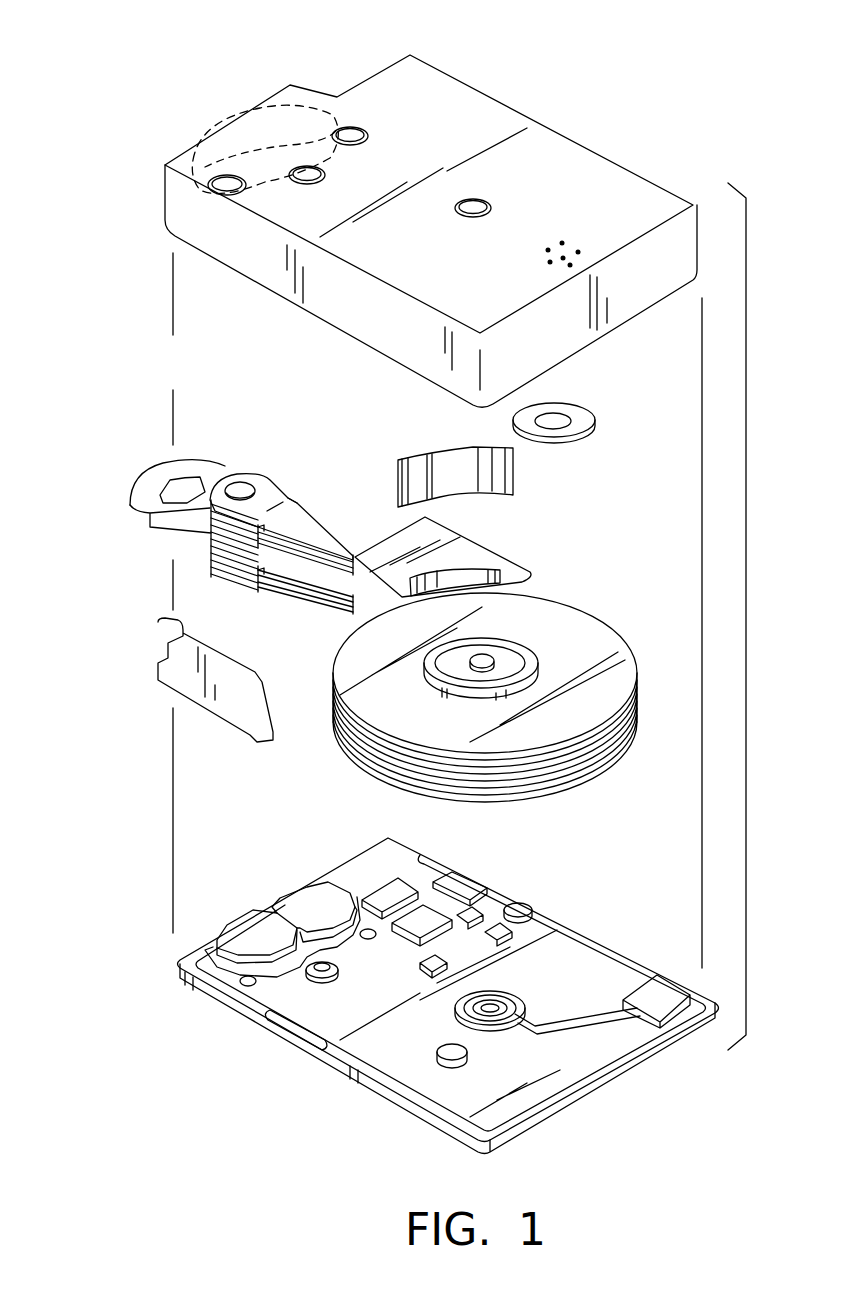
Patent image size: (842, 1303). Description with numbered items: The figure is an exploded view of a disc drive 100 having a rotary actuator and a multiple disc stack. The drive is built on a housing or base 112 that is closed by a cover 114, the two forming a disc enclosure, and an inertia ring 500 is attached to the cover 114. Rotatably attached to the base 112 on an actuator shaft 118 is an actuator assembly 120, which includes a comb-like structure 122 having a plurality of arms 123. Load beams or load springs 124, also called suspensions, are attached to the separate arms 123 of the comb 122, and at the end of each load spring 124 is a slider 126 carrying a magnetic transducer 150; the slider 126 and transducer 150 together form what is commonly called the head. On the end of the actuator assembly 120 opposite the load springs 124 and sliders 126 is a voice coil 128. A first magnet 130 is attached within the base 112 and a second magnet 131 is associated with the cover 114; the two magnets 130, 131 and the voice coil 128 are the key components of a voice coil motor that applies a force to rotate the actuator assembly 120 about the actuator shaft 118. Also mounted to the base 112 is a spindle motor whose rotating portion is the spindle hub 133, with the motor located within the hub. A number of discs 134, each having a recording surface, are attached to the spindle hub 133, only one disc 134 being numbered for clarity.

The disc drive 100 is at (610, 77).
The base 112 is at (607, 965).
The cover 114 is at (586, 162).
The actuator shaft 118 is at (242, 483).
The actuator assembly 120 is at (219, 518).
The comb-like structure 122 is at (263, 587).
The arms 123 is at (298, 500).
The load springs 124 is at (310, 525).
The slider 126 is at (351, 555).
The voice coil 128 is at (148, 483).
The first magnet 130 is at (266, 112).
The second magnet 131 is at (240, 928).
The spindle hub 133 is at (490, 657).
The discs 134 is at (605, 640).
The magnetic transducer 150 is at (384, 553).
The inertia ring 500 is at (576, 415).